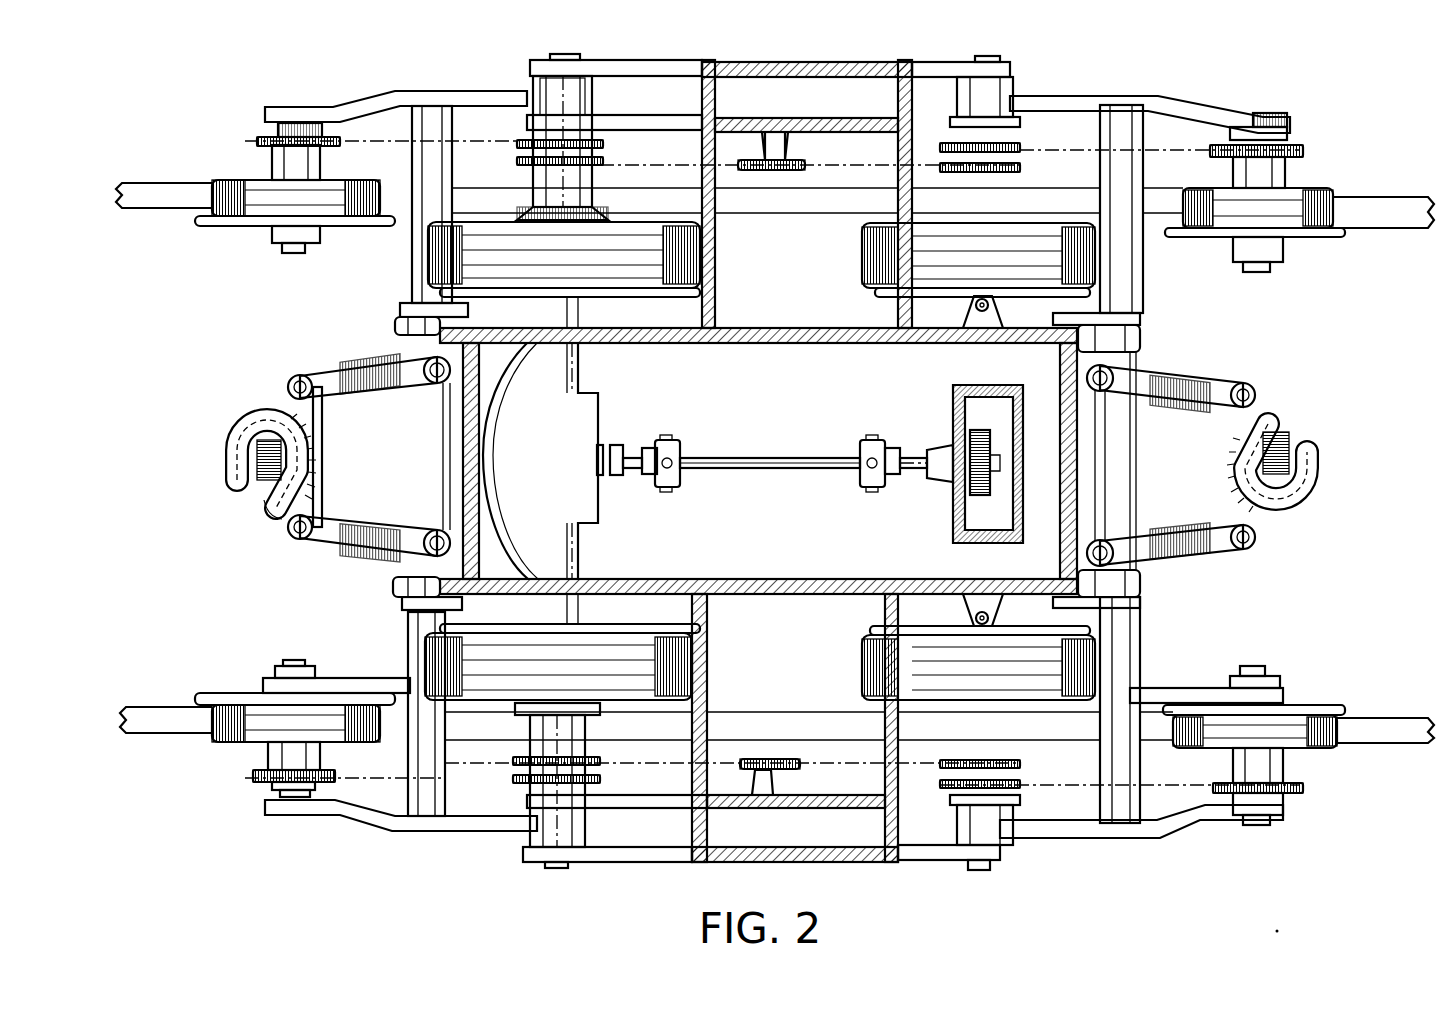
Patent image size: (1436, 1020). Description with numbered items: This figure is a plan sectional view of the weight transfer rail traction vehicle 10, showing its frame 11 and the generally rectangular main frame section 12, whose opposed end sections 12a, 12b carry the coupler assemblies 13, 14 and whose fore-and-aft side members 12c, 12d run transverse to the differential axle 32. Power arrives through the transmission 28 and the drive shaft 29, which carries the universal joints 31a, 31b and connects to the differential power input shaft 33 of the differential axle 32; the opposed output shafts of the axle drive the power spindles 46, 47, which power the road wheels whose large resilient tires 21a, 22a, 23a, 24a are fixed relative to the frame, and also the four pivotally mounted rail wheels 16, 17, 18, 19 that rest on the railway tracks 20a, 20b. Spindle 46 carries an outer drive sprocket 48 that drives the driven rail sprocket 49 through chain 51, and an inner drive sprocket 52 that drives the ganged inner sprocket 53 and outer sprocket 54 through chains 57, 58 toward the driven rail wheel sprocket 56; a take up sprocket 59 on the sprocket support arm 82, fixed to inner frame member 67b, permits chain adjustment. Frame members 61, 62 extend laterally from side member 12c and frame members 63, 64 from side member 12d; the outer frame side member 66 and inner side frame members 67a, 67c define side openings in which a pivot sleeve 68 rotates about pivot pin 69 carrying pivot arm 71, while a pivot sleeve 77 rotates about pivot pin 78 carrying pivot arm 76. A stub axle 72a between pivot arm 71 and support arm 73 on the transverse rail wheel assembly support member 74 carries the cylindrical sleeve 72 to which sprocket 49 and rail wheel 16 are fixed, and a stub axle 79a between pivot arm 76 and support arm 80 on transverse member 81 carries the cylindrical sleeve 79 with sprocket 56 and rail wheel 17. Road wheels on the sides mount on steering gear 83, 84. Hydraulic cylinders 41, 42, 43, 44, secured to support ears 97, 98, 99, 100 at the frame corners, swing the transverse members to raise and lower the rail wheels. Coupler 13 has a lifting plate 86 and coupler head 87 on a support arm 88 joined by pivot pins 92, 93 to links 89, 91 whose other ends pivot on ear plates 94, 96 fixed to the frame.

The traction vehicle 10 is at (1165, 68).
The frame 11 is at (1038, 62).
The main frame section 12 is at (763, 401).
The end section 12a is at (462, 447).
The end section 12b is at (1078, 466).
The side member 12c is at (783, 596).
The side member 12d is at (793, 328).
The coupler assembly 13 is at (330, 440).
The coupler assembly 14 is at (1330, 437).
The rail wheel 16 is at (250, 725).
The rail wheel 17 is at (1350, 720).
The rail wheel 18 is at (250, 200).
The rail wheel 19 is at (1346, 200).
The railway track 20a is at (148, 706).
The railway track 20b is at (152, 198).
The resilient tire 21a is at (512, 662).
The resilient tire 22a is at (1097, 650).
The resilient tire 23a is at (1097, 262).
The resilient tire 24a is at (432, 256).
The transmission 28 is at (955, 396).
The drive shaft 29 is at (760, 458).
The universal joint 31a is at (868, 440).
The universal joint 31b is at (672, 440).
The differential axle 32 is at (582, 360).
The differential power input shaft 33 is at (617, 444).
The hydraulic cylinder 41 is at (392, 588).
The hydraulic cylinder 42 is at (1140, 585).
The hydraulic cylinder 43 is at (393, 325).
The hydraulic cylinder 44 is at (1140, 339).
The power spindle 46 is at (543, 735).
The power spindle 47 is at (578, 165).
The outer drive sprocket 48 is at (517, 143).
The driven rail sprocket 49 is at (262, 138).
The chain 51 is at (375, 108).
The inner drive sprocket 52 is at (517, 160).
The inner sprocket 53 is at (1020, 167).
The outer sprocket 54 is at (1020, 146).
The driven rail wheel sprocket 56 is at (1215, 152).
The chain 57 is at (800, 156).
The chain 58 is at (1115, 150).
The take up sprocket 59 is at (750, 158).
The frame member 61 is at (708, 625).
The frame member 62 is at (885, 612).
The frame member 63 is at (700, 298).
The frame member 64 is at (897, 208).
The outer frame side member 66 is at (650, 862).
The inner side frame member 67a is at (718, 862).
The inner frame member 67b is at (748, 808).
The inner side frame member 67c is at (935, 862).
The pivot sleeve 68 is at (592, 97).
The pivot pin 69 is at (564, 53).
The pivot arm 71 is at (330, 106).
The cylindrical sleeve 72 is at (272, 160).
The stub axle 72a is at (292, 664).
The support arm 73 is at (340, 680).
The transverse rail wheel assembly support member 74 is at (425, 800).
The pivot arm 76 is at (1110, 97).
The pivot sleeve 77 is at (975, 77).
The pivot pin 78 is at (980, 871).
The cylindrical sleeve 79 is at (1285, 170).
The stub axle 79a is at (1256, 112).
The support arm 80 is at (1205, 690).
The transverse rail wheel assembly support member 81 is at (1140, 668).
The sprocket support arm 82 is at (745, 763).
The steering gear 83 is at (975, 620).
The steering gear 84 is at (975, 307).
The lifting plate 86 is at (264, 494).
The coupler head 87 is at (224, 462).
The support arm 88 is at (283, 412).
The link 89 is at (355, 526).
The link 91 is at (350, 385).
The pivot pin 92 is at (293, 538).
The pivot pin 93 is at (298, 378).
The ear plate 94 is at (448, 540).
The ear plate 96 is at (447, 378).
The support ear 97 is at (405, 604).
The support ear 98 is at (1060, 605).
The support ear 99 is at (402, 306).
The support ear 100 is at (1140, 318).